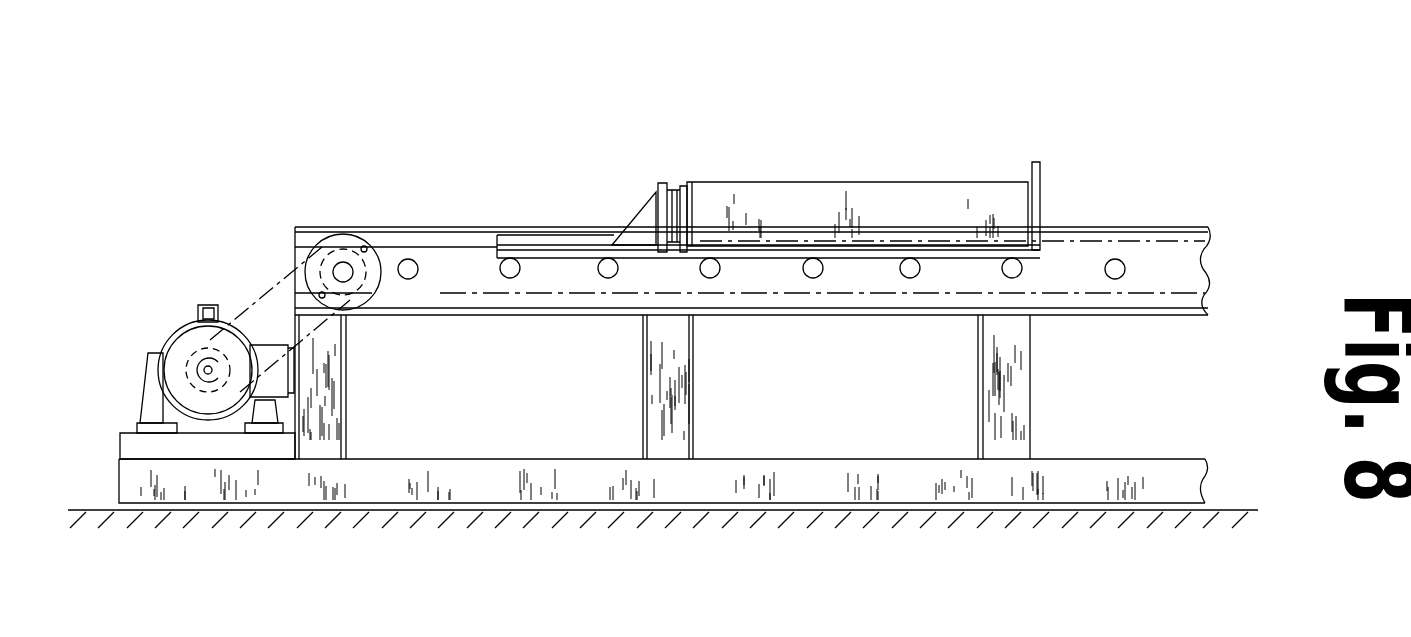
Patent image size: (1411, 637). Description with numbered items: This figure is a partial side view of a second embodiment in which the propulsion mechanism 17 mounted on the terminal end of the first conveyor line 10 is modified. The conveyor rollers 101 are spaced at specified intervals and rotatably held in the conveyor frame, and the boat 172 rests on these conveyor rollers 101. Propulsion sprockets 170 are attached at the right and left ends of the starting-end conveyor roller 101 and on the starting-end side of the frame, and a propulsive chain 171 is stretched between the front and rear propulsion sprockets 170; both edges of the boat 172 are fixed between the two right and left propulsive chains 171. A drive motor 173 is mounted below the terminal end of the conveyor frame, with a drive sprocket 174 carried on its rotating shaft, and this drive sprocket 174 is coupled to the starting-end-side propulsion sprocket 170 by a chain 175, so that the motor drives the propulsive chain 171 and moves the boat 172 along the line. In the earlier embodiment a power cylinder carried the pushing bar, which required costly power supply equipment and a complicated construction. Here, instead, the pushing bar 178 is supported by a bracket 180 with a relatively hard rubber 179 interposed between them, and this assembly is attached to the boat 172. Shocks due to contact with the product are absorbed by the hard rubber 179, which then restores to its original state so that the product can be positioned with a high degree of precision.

The first conveyor line 10 is at (1086, 350).
The propulsion mechanism 17 is at (768, 237).
The conveyor rollers 101 is at (712, 278).
The propulsion sprockets 170 is at (351, 227).
The propulsive chain 171 is at (535, 295).
The boat 172 is at (575, 262).
The drive motor 173 is at (182, 352).
The drive sprocket 174 is at (318, 227).
The chain 175 is at (255, 297).
The pushing bar 178 is at (843, 205).
The hard rubber 179 is at (677, 190).
The bracket 180 is at (637, 222).